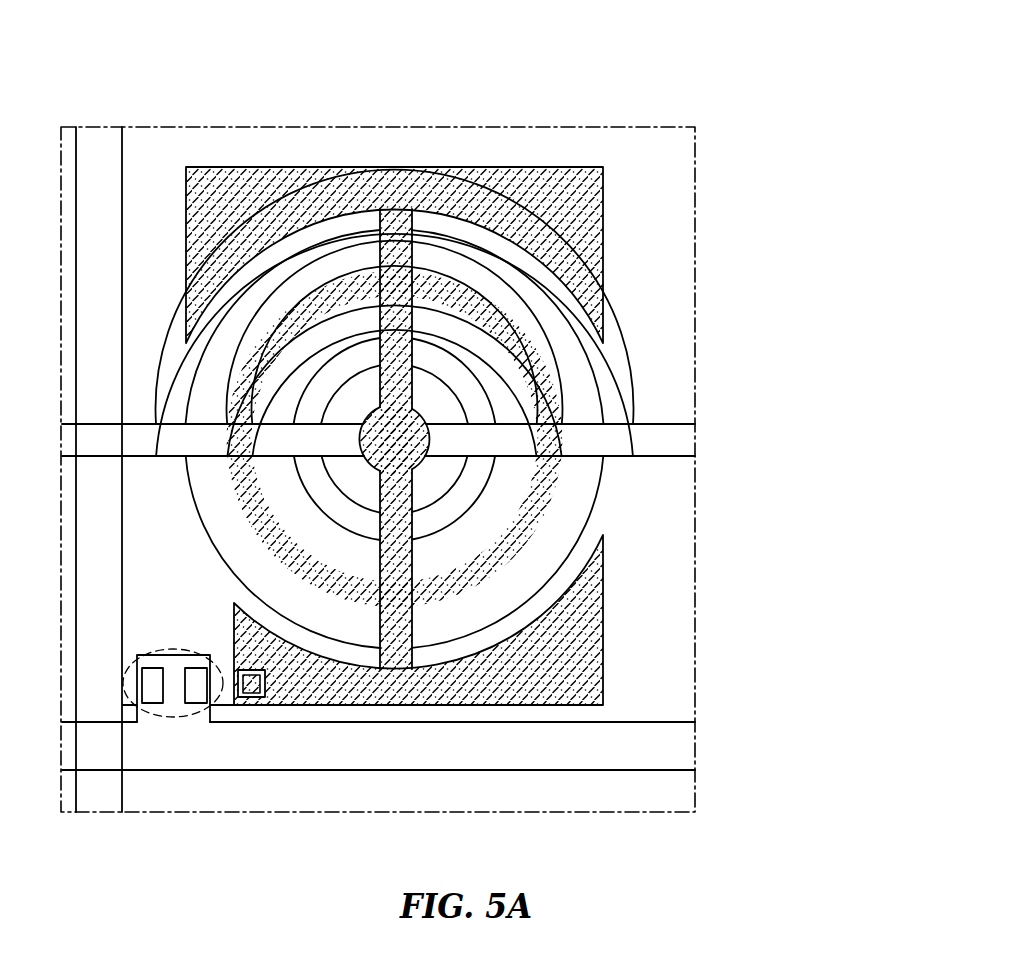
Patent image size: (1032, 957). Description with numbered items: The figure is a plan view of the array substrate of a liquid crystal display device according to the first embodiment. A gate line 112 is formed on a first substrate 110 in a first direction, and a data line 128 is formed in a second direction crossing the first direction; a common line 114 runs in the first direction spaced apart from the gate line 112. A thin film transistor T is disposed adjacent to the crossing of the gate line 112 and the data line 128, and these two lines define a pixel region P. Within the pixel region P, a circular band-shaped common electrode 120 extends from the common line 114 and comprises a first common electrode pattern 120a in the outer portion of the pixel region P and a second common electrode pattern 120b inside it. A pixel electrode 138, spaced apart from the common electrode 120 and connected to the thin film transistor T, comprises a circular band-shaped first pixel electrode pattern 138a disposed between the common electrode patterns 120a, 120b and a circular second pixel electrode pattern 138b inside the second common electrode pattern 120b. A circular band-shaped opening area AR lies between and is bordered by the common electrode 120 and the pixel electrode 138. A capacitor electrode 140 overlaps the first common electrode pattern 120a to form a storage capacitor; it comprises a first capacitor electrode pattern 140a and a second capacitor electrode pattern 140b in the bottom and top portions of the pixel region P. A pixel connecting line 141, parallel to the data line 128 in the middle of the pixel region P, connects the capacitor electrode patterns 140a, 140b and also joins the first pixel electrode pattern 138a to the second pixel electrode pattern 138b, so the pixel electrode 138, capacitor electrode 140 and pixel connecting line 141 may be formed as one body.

The first substrate 110 is at (157, 125).
The pixel region P is at (140, 216).
The opening area AR is at (353, 405).
The common electrode 120 is at (517, 55).
The first common electrode pattern 120a is at (442, 212).
The second common electrode pattern 120b is at (427, 340).
The pixel electrode 138 is at (670, 63).
The first pixel electrode pattern 138a is at (403, 443).
The second pixel electrode pattern 138b is at (472, 295).
The capacitor electrode 140 is at (826, 653).
The first capacitor electrode pattern 140a is at (598, 652).
The second capacitor electrode pattern 140b is at (598, 247).
The pixel connecting line 141 is at (414, 552).
The common line 114 is at (695, 424).
The gate line 112 is at (695, 722).
The data line 128 is at (122, 815).
The thin film transistor T is at (173, 717).